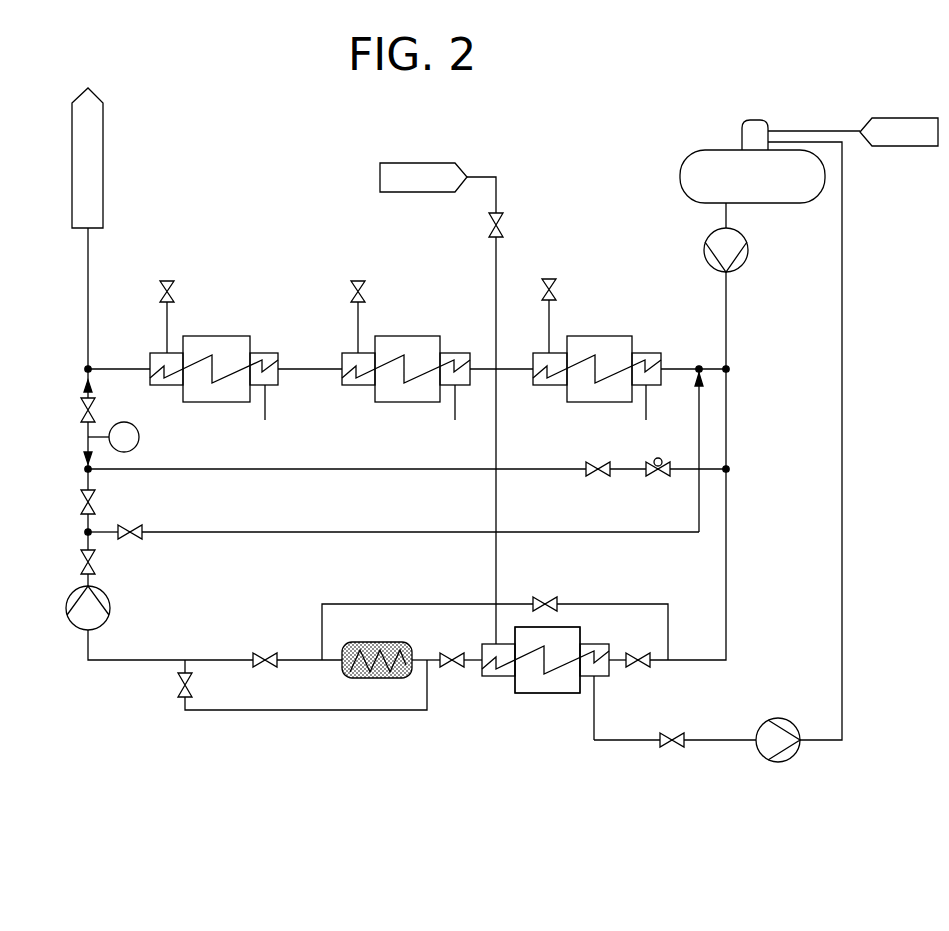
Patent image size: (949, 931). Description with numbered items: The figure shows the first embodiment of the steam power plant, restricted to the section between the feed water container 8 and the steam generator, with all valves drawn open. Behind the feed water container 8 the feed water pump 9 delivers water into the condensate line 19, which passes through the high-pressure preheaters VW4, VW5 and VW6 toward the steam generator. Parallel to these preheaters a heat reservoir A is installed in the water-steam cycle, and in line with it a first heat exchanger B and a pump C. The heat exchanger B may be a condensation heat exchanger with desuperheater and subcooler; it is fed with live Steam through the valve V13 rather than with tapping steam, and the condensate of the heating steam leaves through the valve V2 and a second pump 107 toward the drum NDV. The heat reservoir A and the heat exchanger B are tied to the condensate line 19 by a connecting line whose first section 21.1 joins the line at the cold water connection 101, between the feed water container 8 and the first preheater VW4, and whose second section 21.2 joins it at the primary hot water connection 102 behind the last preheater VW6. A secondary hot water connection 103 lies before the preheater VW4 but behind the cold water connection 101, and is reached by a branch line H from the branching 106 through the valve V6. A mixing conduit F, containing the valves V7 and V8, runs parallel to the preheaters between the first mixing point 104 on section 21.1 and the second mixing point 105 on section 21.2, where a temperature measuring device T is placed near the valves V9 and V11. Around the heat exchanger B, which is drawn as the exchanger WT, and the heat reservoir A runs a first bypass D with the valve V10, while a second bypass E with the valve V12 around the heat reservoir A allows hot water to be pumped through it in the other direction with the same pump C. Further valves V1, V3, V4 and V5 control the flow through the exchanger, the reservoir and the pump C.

The feed water container 8 is at (720, 158).
The feed water pump 9 is at (748, 245).
The condensate line 19 is at (86, 279).
The first section of the connecting line 21.1 is at (728, 405).
The second section of the connecting line 21.2 is at (96, 665).
The cold water connection 101 is at (728, 367).
The primary hot water connection 102 is at (86, 369).
The secondary hot water connection 103 is at (699, 366).
The first mixing point 104 is at (728, 469).
The second mixing point 105 is at (86, 469).
The branching 106 is at (86, 532).
The second pump 107 is at (795, 755).
The heat reservoir A is at (355, 645).
The first heat exchanger B is at (580, 636).
The pump C is at (76, 626).
The first bypass D is at (462, 604).
The second bypass E is at (265, 712).
The mixing conduit F is at (343, 469).
The line H is at (300, 532).
The temperature sensor T is at (113, 437).
The heat exchanger WT is at (545, 683).
The first high-pressure preheater VW4 is at (612, 335).
The high-pressure preheater VW5 is at (405, 337).
The last high-pressure preheater VW6 is at (218, 338).
The valve V1 is at (650, 666).
The valve V2 is at (672, 748).
The valve V3 is at (452, 672).
The valve V4 is at (262, 652).
The valve V5 is at (80, 561).
The valve V6 is at (140, 538).
The valve V7 is at (598, 462).
The valve V8 is at (656, 476).
The valve V9 is at (80, 410).
The valve V10 is at (545, 598).
The valve V11 is at (94, 500).
The valve V12 is at (178, 683).
The valve V13 is at (504, 224).
The element Steam is at (438, 403).
The low-pressure evaporator connection NDV is at (853, 132).